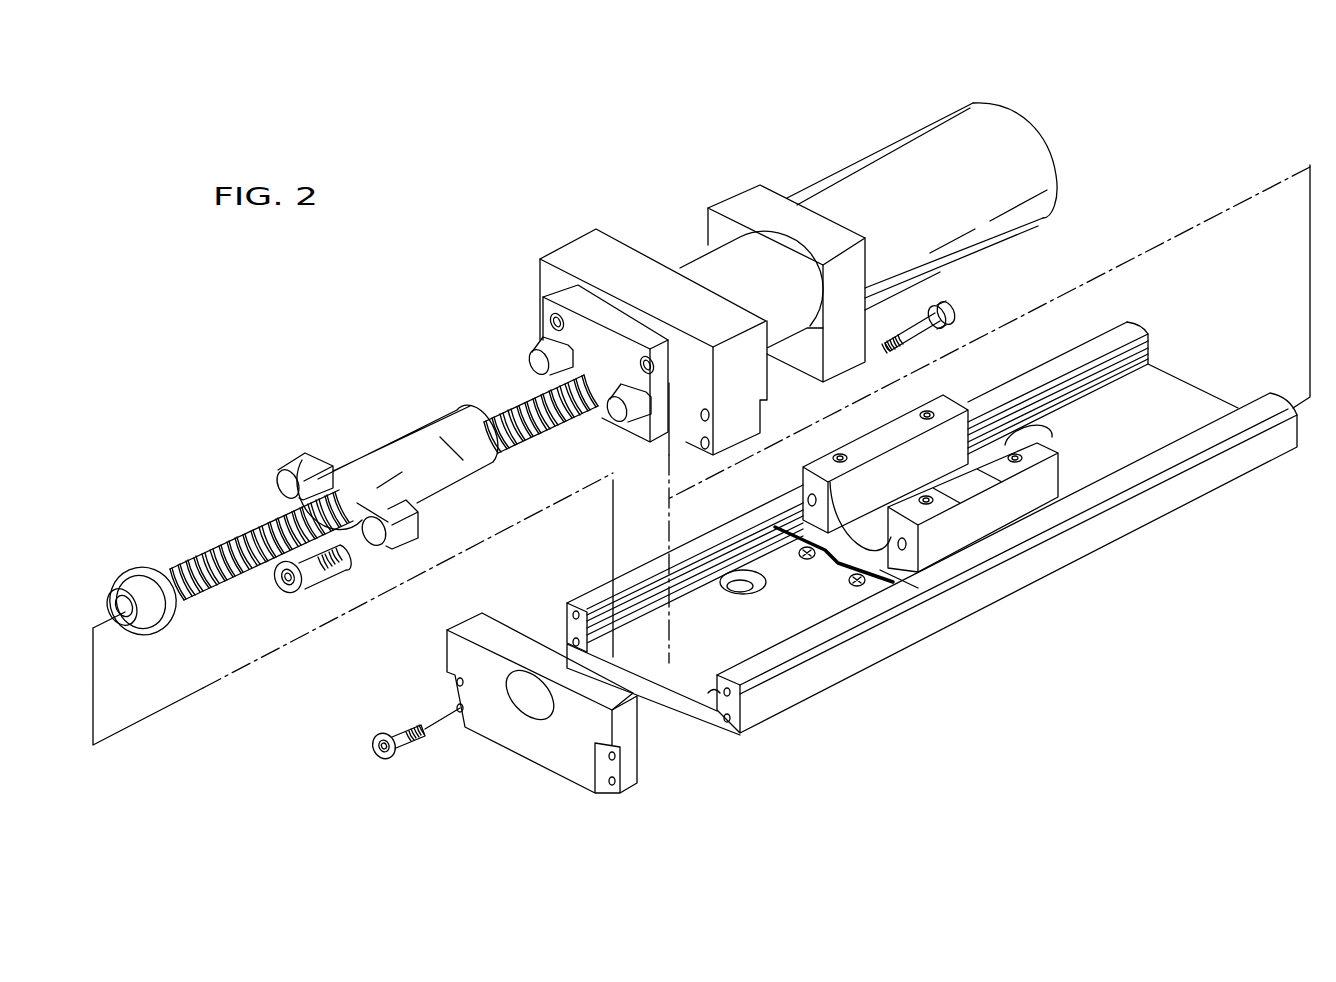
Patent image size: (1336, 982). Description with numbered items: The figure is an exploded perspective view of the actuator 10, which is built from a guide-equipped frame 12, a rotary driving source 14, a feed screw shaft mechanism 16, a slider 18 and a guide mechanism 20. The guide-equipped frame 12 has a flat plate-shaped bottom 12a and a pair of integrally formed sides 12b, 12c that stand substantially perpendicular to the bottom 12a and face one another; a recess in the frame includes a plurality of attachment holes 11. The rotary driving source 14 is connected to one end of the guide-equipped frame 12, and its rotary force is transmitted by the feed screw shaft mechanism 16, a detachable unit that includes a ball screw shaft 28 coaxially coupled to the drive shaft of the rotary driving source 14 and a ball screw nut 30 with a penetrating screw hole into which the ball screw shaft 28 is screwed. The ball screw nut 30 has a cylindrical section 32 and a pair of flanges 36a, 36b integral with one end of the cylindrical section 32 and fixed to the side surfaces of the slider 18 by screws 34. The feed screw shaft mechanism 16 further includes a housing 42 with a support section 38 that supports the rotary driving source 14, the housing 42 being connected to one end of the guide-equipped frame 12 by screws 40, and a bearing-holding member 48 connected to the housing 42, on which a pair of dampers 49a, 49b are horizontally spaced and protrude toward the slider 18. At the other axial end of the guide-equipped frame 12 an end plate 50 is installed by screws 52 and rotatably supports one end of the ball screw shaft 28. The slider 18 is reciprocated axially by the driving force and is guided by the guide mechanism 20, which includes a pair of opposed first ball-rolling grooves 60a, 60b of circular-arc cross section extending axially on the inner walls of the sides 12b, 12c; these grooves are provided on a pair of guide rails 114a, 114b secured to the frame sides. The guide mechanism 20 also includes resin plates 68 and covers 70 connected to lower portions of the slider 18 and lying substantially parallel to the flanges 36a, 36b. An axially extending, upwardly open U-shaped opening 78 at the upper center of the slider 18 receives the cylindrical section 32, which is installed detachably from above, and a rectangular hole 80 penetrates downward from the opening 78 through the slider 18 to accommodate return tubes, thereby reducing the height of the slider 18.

The actuator 10 is at (175, 369).
The attachment holes 11 is at (1037, 427).
The guide-equipped frame 12 is at (897, 540).
The bottom 12a is at (685, 705).
The side 12b is at (822, 487).
The side 12c is at (1007, 585).
The rotary driving source 14 is at (878, 182).
The feed screw shaft mechanism 16 is at (367, 389).
The slider 18 is at (960, 530).
The guide mechanism 20 is at (913, 585).
The ball screw shaft 28 is at (233, 537).
The ball screw nut 30 is at (340, 474).
The cylindrical section 32 is at (435, 438).
The screws 34 is at (315, 580).
The flange 36a is at (300, 457).
The flange 36b is at (397, 508).
The support section 38 is at (747, 205).
The screws 40 is at (955, 317).
The housing 42 is at (597, 267).
The bearing-holding member 48 is at (568, 300).
The damper 49a is at (533, 365).
The damper 49b is at (613, 413).
The end plate 50 is at (475, 620).
The screws 52 is at (413, 730).
The first ball-rolling groove 60a is at (690, 582).
The first ball-rolling groove 60b is at (712, 695).
The plates 68 is at (787, 537).
The covers 70 is at (793, 517).
The opening 78 is at (897, 480).
The hole 80 is at (827, 577).
The guide rail 114a is at (572, 615).
The guide rail 114b is at (735, 708).